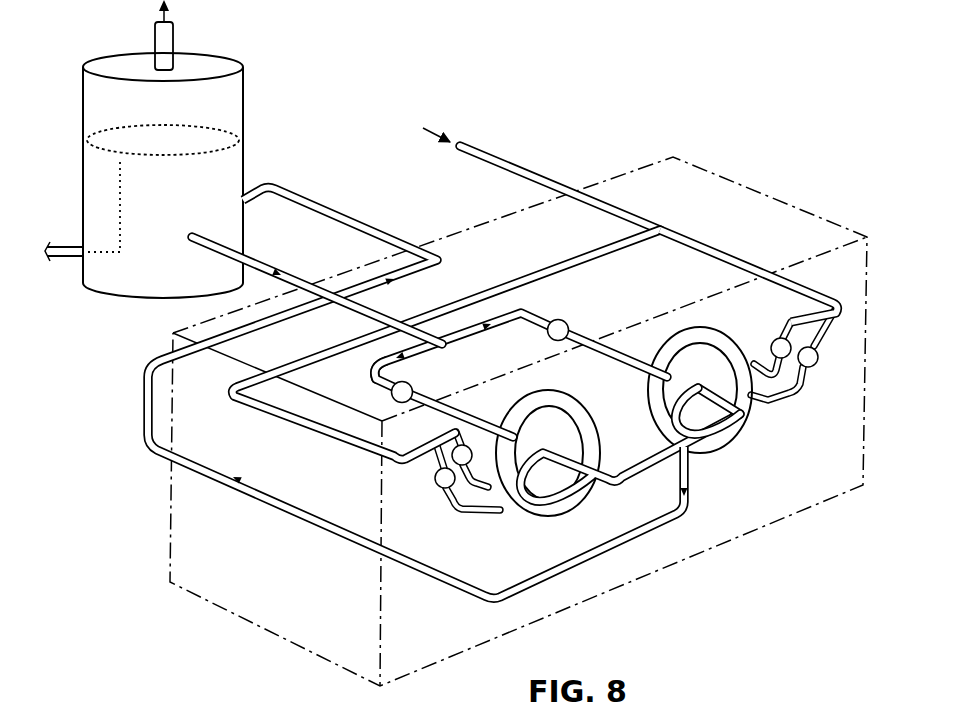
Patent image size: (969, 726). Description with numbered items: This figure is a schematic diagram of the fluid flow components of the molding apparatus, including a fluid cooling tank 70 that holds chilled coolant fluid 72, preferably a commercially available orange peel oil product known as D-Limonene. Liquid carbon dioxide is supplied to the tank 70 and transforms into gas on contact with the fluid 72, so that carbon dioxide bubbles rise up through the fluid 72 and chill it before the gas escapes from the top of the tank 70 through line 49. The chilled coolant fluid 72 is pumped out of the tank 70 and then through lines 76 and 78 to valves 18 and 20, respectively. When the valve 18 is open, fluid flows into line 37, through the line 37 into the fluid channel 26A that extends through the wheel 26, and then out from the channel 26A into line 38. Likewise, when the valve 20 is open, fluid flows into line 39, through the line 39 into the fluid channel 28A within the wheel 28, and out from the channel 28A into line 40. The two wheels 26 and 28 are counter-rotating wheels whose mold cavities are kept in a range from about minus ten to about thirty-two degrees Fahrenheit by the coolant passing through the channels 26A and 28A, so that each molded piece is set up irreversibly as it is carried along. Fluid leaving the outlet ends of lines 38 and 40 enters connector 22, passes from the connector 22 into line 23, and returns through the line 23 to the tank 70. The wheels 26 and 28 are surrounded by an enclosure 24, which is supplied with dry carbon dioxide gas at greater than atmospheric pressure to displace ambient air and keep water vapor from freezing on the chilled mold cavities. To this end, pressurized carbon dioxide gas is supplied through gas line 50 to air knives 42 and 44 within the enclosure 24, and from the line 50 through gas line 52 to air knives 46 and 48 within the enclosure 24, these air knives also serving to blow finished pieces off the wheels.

The valve 18 is at (413, 381).
The valve 20 is at (564, 318).
The connector 22 is at (692, 442).
The line 23 is at (255, 187).
The enclosure 24 is at (227, 613).
The wheel 26 is at (538, 392).
The fluid channel 26A is at (573, 412).
The wheel 28 is at (710, 327).
The fluid channel 28A is at (692, 350).
The line 37 is at (485, 430).
The line 38 is at (590, 488).
The line 39 is at (642, 357).
The line 40 is at (727, 425).
The air knife 42 is at (473, 487).
The air knife 44 is at (498, 514).
The air knife 46 is at (800, 387).
The air knife 48 is at (768, 410).
The line 49 is at (168, 43).
The gas line 50 is at (513, 163).
The gas line 52 is at (730, 247).
The tank 70 is at (238, 102).
The chilled coolant fluid 72 is at (194, 203).
The line 76 is at (372, 380).
The line 78 is at (458, 343).